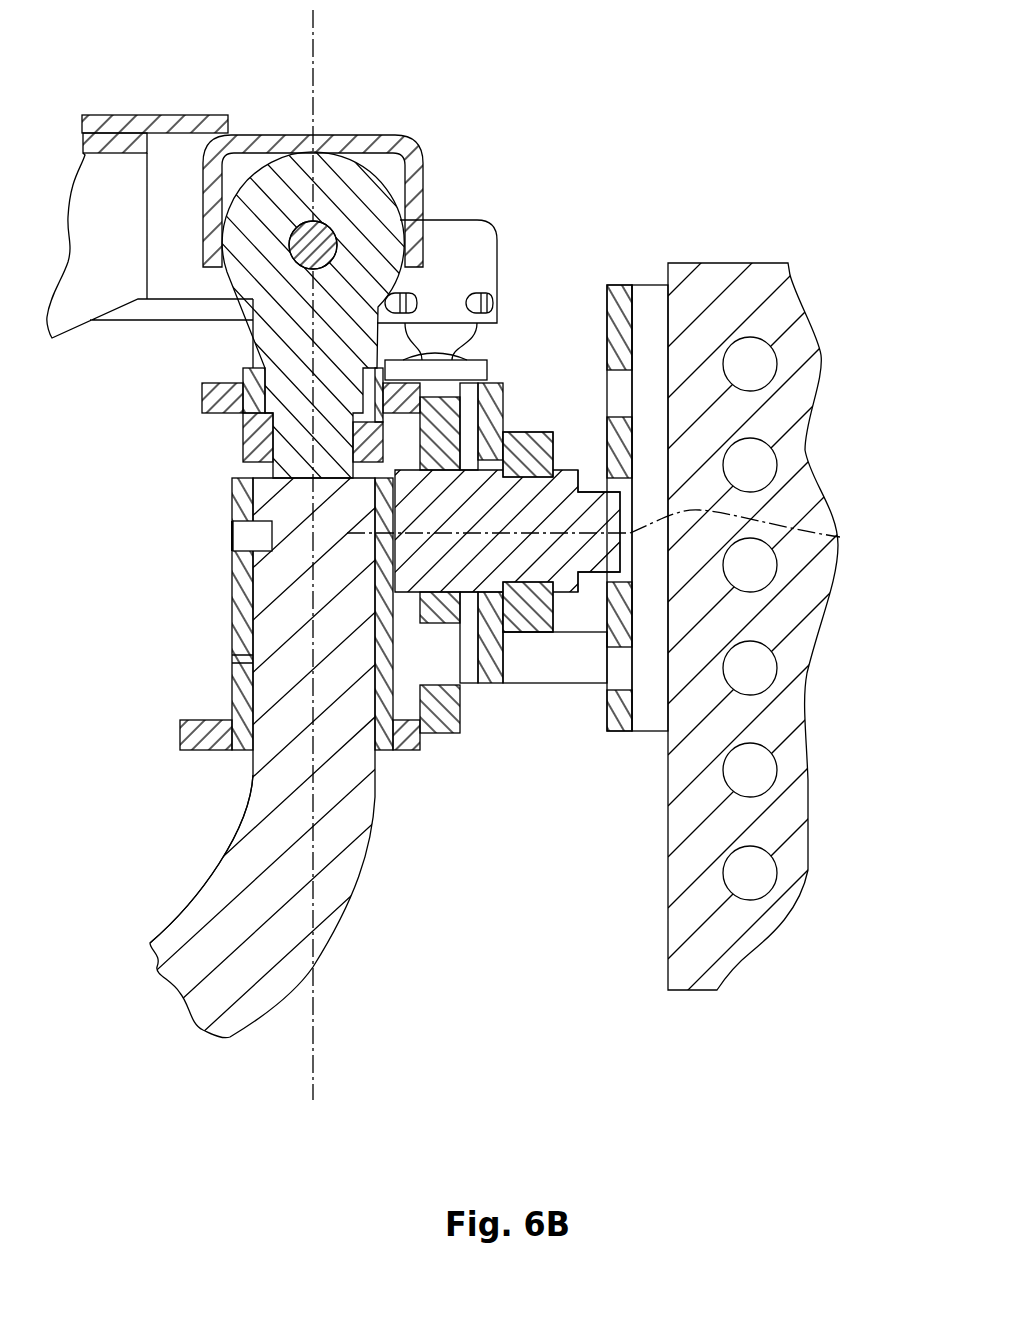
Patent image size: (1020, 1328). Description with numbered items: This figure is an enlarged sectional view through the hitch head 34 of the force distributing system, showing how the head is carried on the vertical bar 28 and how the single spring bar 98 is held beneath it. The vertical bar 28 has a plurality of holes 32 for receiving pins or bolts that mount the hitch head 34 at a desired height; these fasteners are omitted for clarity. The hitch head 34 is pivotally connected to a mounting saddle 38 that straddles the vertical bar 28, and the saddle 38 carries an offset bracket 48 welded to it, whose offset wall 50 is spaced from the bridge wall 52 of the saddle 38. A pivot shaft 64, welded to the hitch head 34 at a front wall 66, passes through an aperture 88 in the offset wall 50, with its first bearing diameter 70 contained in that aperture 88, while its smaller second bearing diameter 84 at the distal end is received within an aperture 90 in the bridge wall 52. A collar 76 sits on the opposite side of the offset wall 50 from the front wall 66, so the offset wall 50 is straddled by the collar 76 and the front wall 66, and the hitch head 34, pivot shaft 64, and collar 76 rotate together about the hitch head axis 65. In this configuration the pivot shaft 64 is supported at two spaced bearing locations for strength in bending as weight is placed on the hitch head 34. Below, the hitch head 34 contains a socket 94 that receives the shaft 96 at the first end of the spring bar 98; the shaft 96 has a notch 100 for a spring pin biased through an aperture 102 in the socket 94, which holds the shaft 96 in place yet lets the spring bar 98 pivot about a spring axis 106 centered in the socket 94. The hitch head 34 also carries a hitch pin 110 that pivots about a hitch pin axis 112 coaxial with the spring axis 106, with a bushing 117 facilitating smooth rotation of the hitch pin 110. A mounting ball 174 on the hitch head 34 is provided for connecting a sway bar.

The vertical bar 28 is at (740, 262).
The holes 32 is at (777, 365).
The hitch head 34 is at (155, 440).
The mounting saddle 38 is at (650, 731).
The offset bracket 48 is at (527, 685).
The offset wall 50 is at (493, 685).
The bridge wall 52 is at (620, 285).
The pivot shaft 64 is at (420, 513).
The hitch head axis 65 is at (840, 537).
The front wall 66 is at (441, 737).
The first bearing diameter 70 is at (483, 575).
The collar 76 is at (540, 633).
The second bearing diameter 84 is at (593, 480).
The aperture 88 is at (495, 457).
The aperture 90 is at (627, 473).
The socket 94 is at (250, 577).
The shaft 96 is at (270, 690).
The spring bar 98 is at (187, 917).
The notch 100 is at (235, 545).
The aperture 102 is at (232, 527).
The spring axis 106 is at (306, 1068).
The hitch pin 110 is at (272, 343).
The hitch pin axis 112 is at (306, 50).
The bushing 117 is at (242, 373).
The mounting balls 174 is at (463, 358).